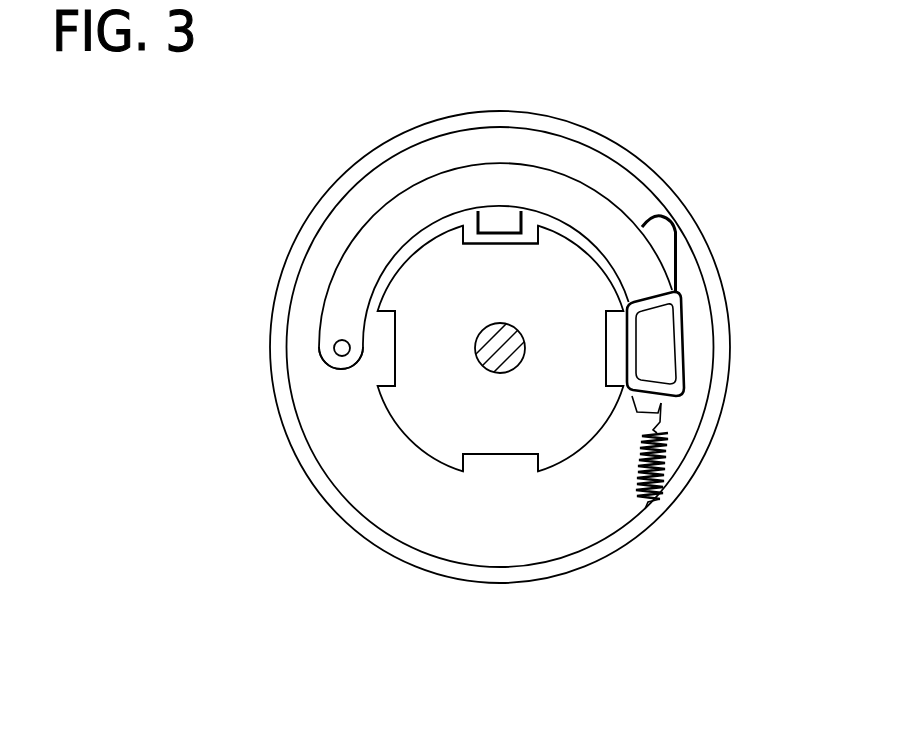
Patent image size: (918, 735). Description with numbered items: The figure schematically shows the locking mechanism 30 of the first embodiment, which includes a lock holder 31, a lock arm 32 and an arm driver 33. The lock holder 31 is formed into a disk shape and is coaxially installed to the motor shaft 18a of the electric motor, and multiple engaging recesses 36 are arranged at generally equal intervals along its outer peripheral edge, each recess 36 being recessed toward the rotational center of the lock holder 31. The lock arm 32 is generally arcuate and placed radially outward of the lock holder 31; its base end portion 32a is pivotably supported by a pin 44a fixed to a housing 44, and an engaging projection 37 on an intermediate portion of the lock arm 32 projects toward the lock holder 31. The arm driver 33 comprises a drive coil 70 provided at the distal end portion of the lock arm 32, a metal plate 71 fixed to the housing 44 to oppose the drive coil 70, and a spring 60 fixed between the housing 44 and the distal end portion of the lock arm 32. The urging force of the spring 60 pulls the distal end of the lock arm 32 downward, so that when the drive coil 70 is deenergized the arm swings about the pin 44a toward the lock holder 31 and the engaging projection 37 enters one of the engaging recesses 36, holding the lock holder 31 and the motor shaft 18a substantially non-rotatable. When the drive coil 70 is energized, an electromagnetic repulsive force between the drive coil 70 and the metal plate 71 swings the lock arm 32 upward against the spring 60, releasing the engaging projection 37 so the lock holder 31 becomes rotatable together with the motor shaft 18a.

The locking mechanism 30 is at (328, 260).
The lock holder 31 is at (548, 424).
The lock arm 32 is at (397, 217).
The base end portion 32a is at (322, 340).
The arm driver 33 is at (702, 411).
The engaging recesses 36 is at (530, 248).
The engaging projection 37 is at (495, 222).
The housing 44 is at (722, 291).
The pin 44a is at (333, 348).
The drive coil 70 is at (690, 348).
The metal plate 71 is at (678, 252).
The spring 60 is at (645, 508).
The motor shaft 18a is at (481, 367).